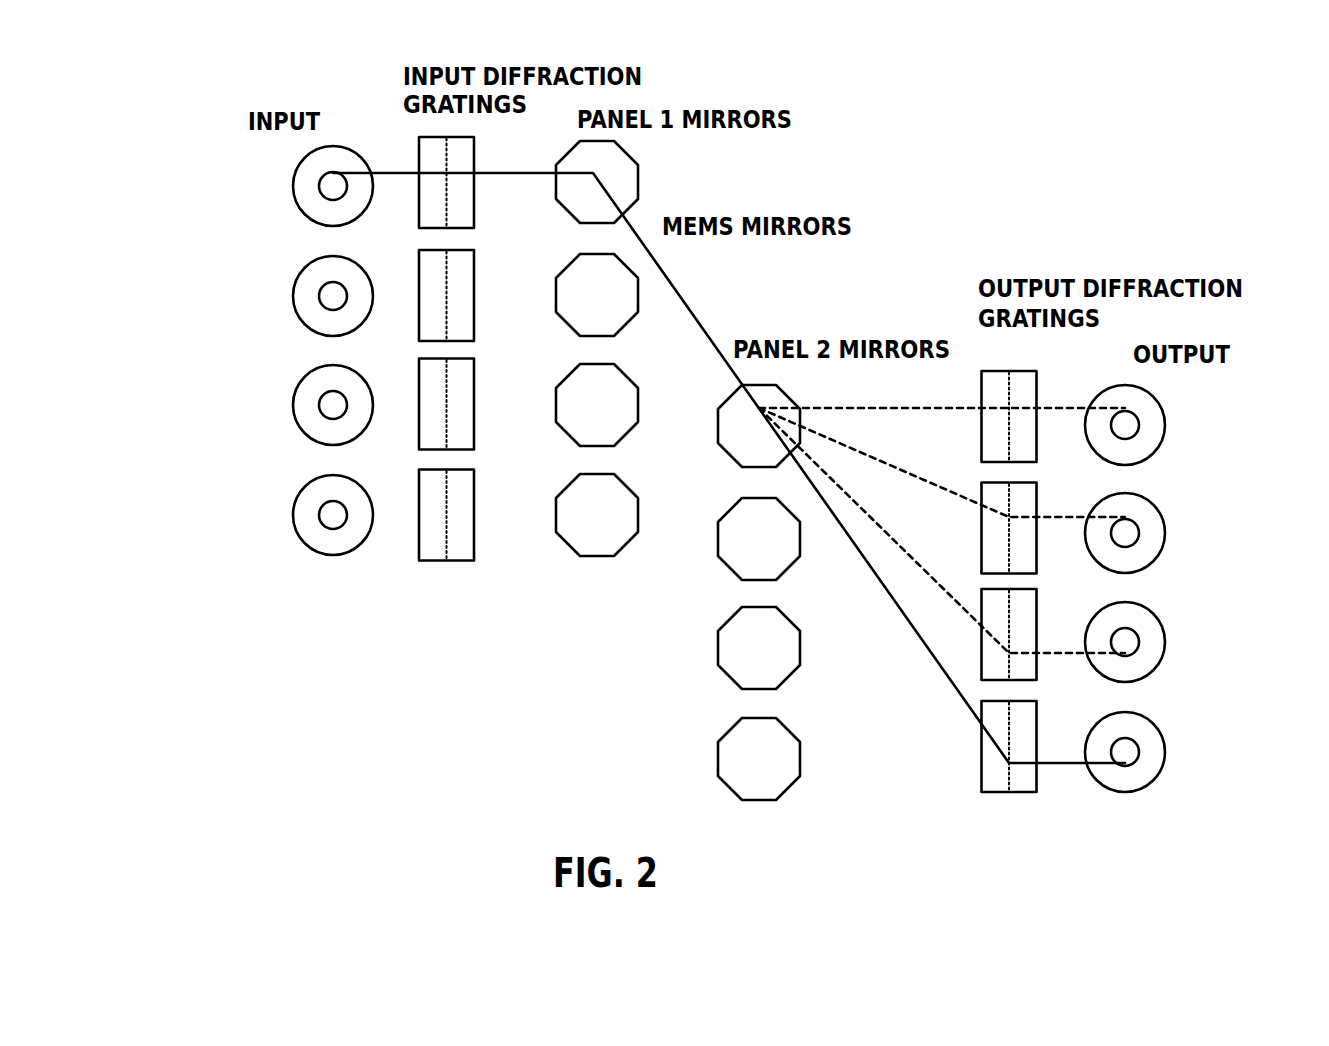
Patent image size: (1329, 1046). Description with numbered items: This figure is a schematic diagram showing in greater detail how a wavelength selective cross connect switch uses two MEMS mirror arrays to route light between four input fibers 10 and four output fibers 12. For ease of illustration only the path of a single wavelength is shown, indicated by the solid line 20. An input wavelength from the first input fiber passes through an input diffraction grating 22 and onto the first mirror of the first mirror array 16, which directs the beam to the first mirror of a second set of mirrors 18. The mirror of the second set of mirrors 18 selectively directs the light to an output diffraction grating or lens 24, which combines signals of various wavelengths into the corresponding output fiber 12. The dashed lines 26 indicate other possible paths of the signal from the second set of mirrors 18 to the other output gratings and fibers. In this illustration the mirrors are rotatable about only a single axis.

The input fibers 10 is at (325, 570).
The input diffraction grating 22 is at (447, 570).
The first mirror array 16 is at (597, 575).
The solid line 20 is at (665, 273).
The second set of mirrors 18 is at (738, 808).
The dashed lines 26 is at (883, 407).
The output diffraction grating 24 is at (1008, 808).
The output fibers 12 is at (1130, 810).